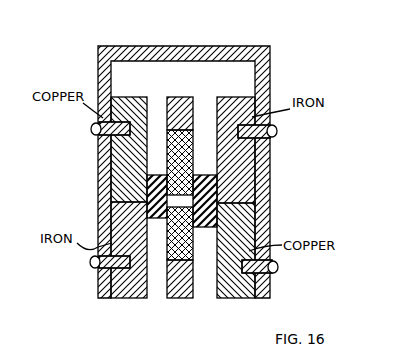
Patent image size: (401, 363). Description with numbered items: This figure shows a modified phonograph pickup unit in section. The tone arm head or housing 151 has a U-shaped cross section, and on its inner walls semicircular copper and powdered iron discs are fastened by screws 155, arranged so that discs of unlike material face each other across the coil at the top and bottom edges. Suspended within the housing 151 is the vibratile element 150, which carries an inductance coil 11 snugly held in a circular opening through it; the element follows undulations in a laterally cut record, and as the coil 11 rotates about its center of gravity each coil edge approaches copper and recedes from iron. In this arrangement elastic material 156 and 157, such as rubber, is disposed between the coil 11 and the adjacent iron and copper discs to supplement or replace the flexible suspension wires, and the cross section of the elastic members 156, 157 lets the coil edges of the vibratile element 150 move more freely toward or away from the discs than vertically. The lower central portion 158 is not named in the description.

The tone arm head or housing 151 is at (233, 59).
The vibratile element 150 is at (166, 96).
The inductance coil 11 is at (163, 144).
The screws 155 is at (278, 132).
The elastic material 156 is at (203, 176).
The elastic material 157 is at (159, 224).
The center core (lower portion) 158 is at (187, 299).